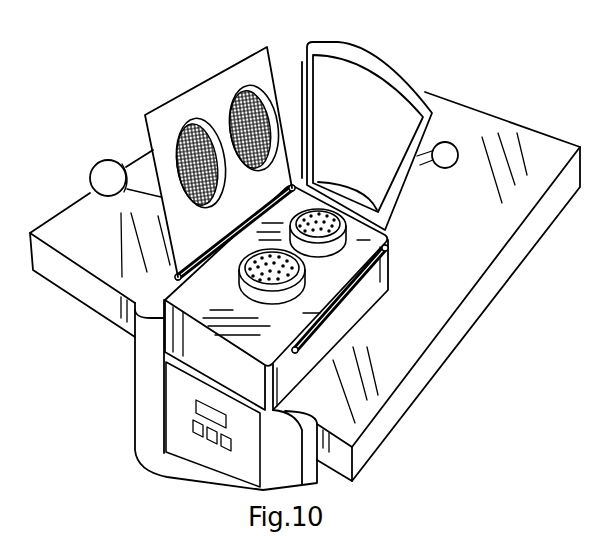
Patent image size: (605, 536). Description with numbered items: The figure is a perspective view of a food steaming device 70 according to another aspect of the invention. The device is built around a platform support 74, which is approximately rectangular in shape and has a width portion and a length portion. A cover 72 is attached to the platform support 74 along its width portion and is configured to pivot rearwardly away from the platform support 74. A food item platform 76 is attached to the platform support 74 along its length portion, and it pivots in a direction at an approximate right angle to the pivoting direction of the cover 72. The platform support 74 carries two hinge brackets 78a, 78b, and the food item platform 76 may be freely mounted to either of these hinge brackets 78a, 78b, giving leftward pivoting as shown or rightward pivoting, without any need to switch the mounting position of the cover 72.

The food steaming device 70 is at (58, 105).
The cover 72 is at (375, 63).
The platform support 74 is at (365, 292).
The food item platform 76 is at (203, 91).
The hinge bracket 78a is at (213, 272).
The hinge bracket 78b is at (333, 307).